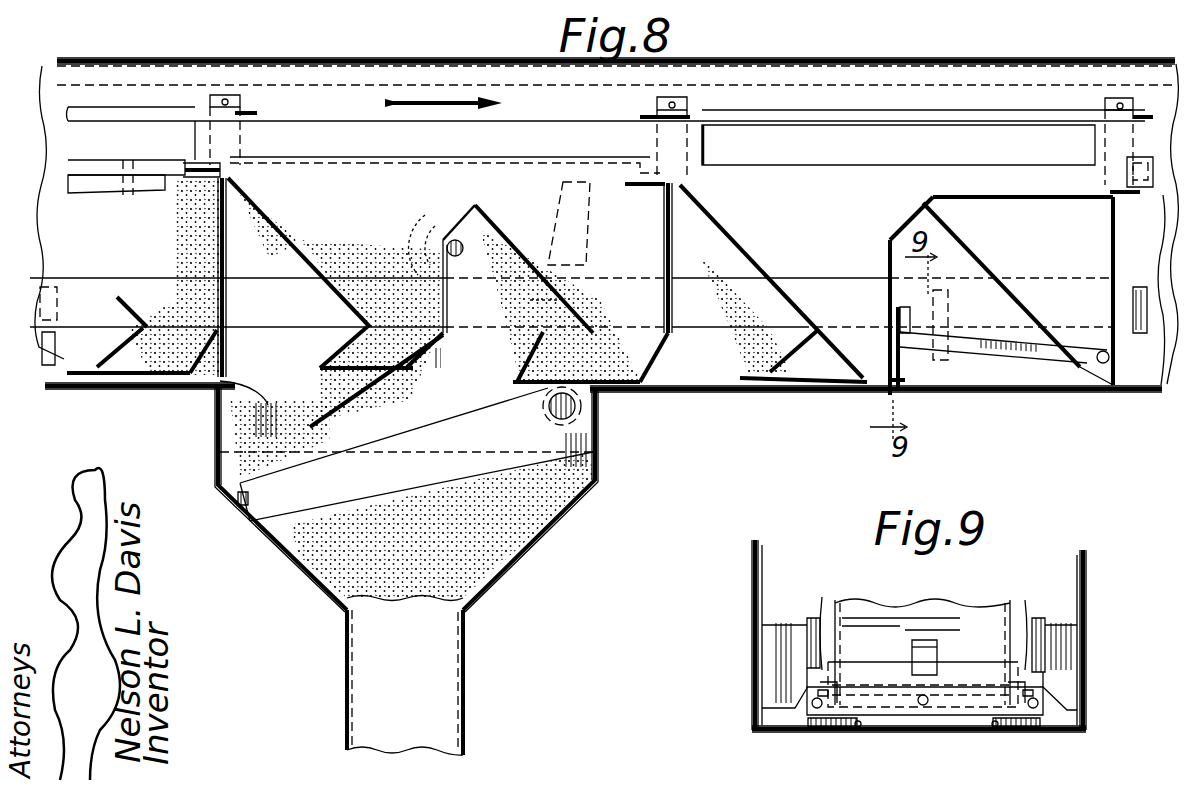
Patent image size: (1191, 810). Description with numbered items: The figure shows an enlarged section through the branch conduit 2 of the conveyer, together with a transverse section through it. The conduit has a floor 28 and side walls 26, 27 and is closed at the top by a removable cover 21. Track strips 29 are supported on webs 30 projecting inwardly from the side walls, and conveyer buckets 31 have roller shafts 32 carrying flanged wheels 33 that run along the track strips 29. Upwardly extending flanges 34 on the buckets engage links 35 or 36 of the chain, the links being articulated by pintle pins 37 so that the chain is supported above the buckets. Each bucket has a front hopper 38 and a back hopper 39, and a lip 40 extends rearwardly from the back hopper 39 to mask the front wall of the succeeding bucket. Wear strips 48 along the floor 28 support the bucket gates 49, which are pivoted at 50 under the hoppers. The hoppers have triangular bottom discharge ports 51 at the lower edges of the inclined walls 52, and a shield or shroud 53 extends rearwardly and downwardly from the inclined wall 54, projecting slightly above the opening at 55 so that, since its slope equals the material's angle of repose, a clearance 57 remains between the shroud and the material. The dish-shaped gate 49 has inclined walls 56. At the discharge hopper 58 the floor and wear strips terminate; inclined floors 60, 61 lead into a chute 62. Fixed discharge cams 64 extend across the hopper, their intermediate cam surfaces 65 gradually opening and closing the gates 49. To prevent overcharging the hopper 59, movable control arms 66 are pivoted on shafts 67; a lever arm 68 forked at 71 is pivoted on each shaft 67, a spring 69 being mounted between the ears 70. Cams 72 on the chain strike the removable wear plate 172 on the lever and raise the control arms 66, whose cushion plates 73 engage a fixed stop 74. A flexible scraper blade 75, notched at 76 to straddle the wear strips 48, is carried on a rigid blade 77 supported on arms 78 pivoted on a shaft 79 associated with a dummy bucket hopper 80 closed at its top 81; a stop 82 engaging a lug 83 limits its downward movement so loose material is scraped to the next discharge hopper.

In FIG. 8, the branch conduit 2 is at (150, 50).
In FIG. 9, the branch conduit 2 is at (742, 594).
In FIG. 8, the removable cover 21 is at (268, 58).
In FIG. 9, the side wall 26 is at (1090, 581).
In FIG. 8, the side wall 27 is at (1135, 362).
In FIG. 9, the side wall 27 is at (752, 566).
In FIG. 8, the floor 28 is at (70, 389).
In FIG. 9, the floor 28 is at (778, 732).
In FIG. 8, the track strip 29 is at (68, 288).
In FIG. 9, the track strip 29 is at (810, 620).
In FIG. 8, the web 30 is at (48, 367).
In FIG. 9, the web 30 is at (768, 644).
In FIG. 8, the conveyer bucket 31 is at (388, 172).
In FIG. 9, the conveyer bucket 31 is at (872, 608).
In FIG. 8, the roller shaft 32 is at (458, 278).
In FIG. 8, the flanged wheel 33 is at (488, 262).
In FIG. 8, the upwardly extending flange 34 is at (327, 157).
In FIG. 8, the chain link 35 is at (165, 121).
In FIG. 8, the chain link 36 is at (528, 135).
In FIG. 8, the pintle pin 37 is at (221, 95).
In FIG. 8, the front hopper 38 is at (143, 276).
In FIG. 8, the back hopper 39 is at (308, 243).
In FIG. 8, the lip 40 is at (226, 192).
In FIG. 8, the wear strip 48 is at (214, 370).
In FIG. 9, the wear strip 48 is at (822, 730).
In FIG. 8, the bucket gate 49 is at (112, 392).
In FIG. 8, the gate pivot 50 is at (215, 340).
In FIG. 8, the bottom discharge port 51 is at (446, 340).
In FIG. 8, the inclined wall 52 is at (222, 310).
In FIG. 8, the shield or shroud 53 is at (103, 350).
In FIG. 8, the inclined wall 54 is at (118, 306).
In FIG. 8, the clearance projection 55 is at (168, 265).
In FIG. 8, the inclined gate wall 56 is at (48, 408).
In FIG. 8, the clearance 57 is at (122, 336).
In FIG. 8, the discharge hopper 58 is at (478, 661).
In FIG. 8, the hopper 59 is at (590, 466).
In FIG. 8, the inclined floor 60 is at (470, 600).
In FIG. 8, the inclined floor 61 is at (300, 557).
In FIG. 8, the chute 62 is at (445, 705).
In FIG. 8, the fixed discharge cam 64 is at (232, 432).
In FIG. 8, the cam surface 65 is at (262, 402).
In FIG. 8, the movable control arm 66 is at (292, 498).
In FIG. 8, the shaft 67 is at (582, 421).
In FIG. 8, the lever arm 68 is at (598, 211).
In FIG. 8, the spring 69 is at (545, 356).
In FIG. 8, the ear 70 is at (540, 302).
In FIG. 8, the fork 71 is at (545, 338).
In FIG. 8, the cam 72 is at (108, 186).
In FIG. 8, the cushion plate 73 is at (236, 508).
In FIG. 8, the fixed stop 74 is at (215, 428).
In FIG. 8, the scraper blade 75 is at (919, 401).
In FIG. 9, the scraper blade 75 is at (908, 720).
In FIG. 9, the notch 76 is at (860, 728).
In FIG. 8, the rigid blade 77 is at (893, 380).
In FIG. 9, the rigid blade 77 is at (864, 673).
In FIG. 8, the arm 78 is at (1035, 352).
In FIG. 9, the arm 78 is at (822, 610).
In FIG. 8, the shaft 79 is at (1103, 365).
In FIG. 9, the shaft 79 is at (1034, 689).
In FIG. 8, the dummy bucket hopper 80 is at (1098, 240).
In FIG. 9, the dummy bucket hopper 80 is at (950, 608).
In FIG. 8, the closed top 81 is at (1036, 199).
In FIG. 8, the stop 82 is at (920, 312).
In FIG. 9, the stop 82 is at (930, 655).
In FIG. 8, the lug 83 is at (895, 328).
In FIG. 8, the removable wear plate 172 is at (580, 182).